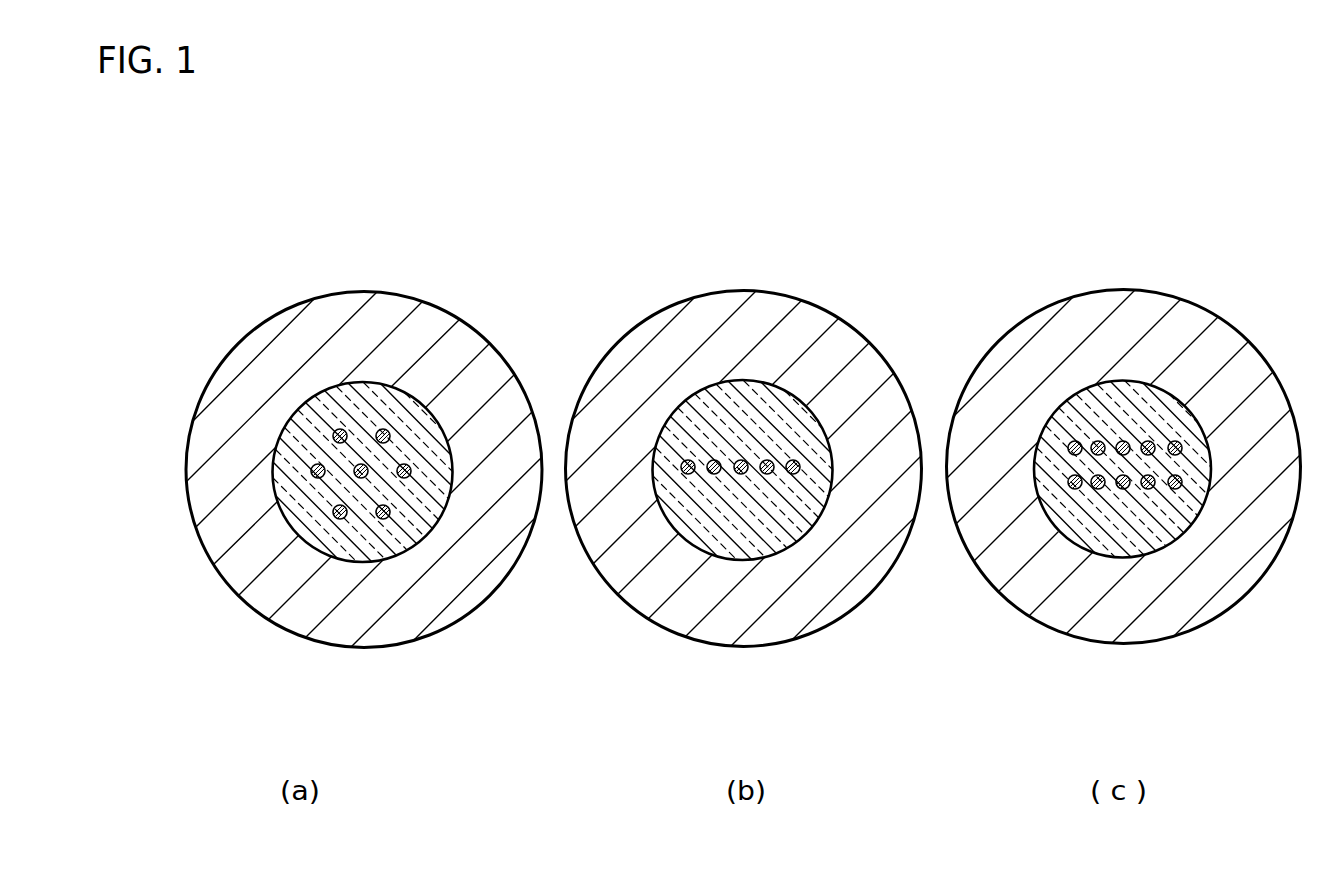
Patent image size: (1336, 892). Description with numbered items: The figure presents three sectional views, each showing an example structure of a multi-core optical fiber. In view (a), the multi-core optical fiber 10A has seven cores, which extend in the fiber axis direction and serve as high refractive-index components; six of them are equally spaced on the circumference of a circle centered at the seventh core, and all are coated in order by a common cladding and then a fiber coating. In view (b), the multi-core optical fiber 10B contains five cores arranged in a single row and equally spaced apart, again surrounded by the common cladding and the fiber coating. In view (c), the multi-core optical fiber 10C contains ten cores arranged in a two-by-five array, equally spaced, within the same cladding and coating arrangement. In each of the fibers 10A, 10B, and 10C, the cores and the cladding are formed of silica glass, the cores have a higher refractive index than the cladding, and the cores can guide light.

The multi-core optical fiber 10A is at (513, 207).
The multi-core optical fiber 10B is at (935, 207).
The multi-core optical fiber 10C is at (1300, 205).